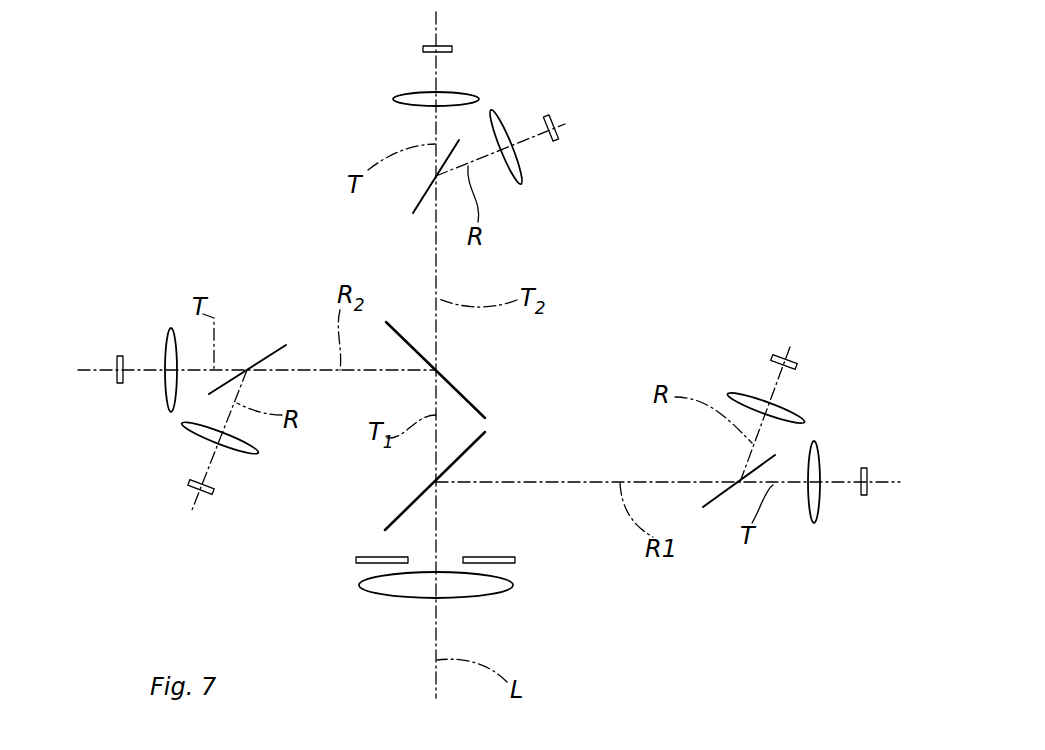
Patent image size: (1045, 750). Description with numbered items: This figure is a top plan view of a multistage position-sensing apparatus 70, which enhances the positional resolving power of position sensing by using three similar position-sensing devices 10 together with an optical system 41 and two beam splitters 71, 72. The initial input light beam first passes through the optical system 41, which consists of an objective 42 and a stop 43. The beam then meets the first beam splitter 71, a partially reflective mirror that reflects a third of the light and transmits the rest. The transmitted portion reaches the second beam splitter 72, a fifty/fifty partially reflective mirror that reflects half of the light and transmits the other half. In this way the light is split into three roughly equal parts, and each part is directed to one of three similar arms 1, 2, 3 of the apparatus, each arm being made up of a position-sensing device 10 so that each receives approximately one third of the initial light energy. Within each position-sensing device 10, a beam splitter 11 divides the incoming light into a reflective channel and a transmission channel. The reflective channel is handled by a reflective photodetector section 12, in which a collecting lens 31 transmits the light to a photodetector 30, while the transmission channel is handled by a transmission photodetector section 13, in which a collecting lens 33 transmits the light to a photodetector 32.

The arm 1 is at (847, 580).
The arm 2 is at (105, 450).
The arm 3 is at (287, 79).
The position-sensing device 10 is at (395, 123).
The beam splitter 11 is at (420, 193).
The reflective photodetector section 12 is at (543, 168).
The transmission photodetector section 13 is at (470, 63).
The photodetector 30 is at (563, 132).
The collecting lens 31 is at (473, 95).
The photodetector 32 is at (425, 46).
The collecting lens 33 is at (415, 95).
The optical system 41 is at (527, 580).
The objective 42 is at (400, 585).
The stop 43 is at (497, 557).
The multistage position-sensing apparatus 70 is at (742, 185).
The first beam splitter 71 is at (405, 507).
The second beam splitter 72 is at (463, 395).